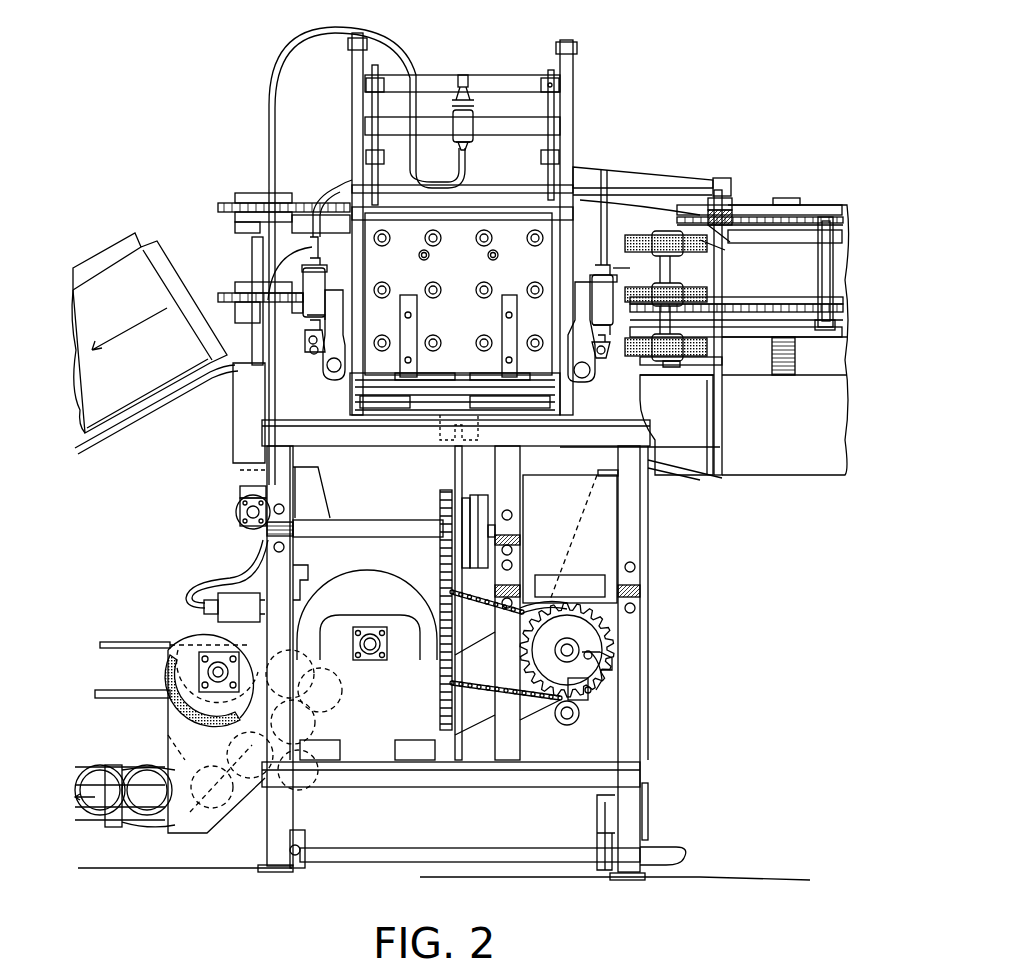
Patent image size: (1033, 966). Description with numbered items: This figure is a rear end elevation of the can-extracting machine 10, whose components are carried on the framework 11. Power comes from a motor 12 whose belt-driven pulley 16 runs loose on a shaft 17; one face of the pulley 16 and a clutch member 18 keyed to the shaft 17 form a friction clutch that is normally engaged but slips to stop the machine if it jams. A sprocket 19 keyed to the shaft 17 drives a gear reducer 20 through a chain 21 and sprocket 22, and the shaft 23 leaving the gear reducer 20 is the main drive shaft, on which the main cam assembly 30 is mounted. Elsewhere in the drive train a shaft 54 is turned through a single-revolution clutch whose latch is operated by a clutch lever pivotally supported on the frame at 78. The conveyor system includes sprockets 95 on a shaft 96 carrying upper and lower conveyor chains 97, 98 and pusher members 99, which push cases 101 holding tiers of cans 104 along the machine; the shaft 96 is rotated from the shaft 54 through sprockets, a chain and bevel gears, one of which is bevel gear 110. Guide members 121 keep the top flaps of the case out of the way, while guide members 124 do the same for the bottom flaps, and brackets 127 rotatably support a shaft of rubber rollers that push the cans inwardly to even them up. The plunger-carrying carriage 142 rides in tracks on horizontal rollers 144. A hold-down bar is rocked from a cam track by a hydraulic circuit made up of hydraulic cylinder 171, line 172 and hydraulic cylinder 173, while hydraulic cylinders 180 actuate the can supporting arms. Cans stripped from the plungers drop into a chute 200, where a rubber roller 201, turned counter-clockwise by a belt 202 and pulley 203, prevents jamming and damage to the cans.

The machine 10 is at (701, 540).
The framework 11 is at (640, 680).
The motor 12 is at (572, 534).
The pulley 16 is at (480, 498).
The shaft 17 is at (386, 525).
The clutch member 18 is at (468, 496).
The sprocket 19 is at (440, 500).
The gear reducer 20 is at (380, 628).
The chain 21 is at (440, 562).
The sprocket 22 is at (450, 716).
The shaft 23 is at (366, 670).
The main cam assembly 30 is at (366, 571).
The shaft 54 is at (576, 632).
The pivot 78 is at (295, 856).
The sprockets 95 is at (226, 200).
The shaft 96 is at (250, 252).
The upper conveyor chain 97 is at (766, 212).
The lower conveyor chain 98 is at (758, 305).
The pusher members 99 is at (836, 215).
The cases 101 is at (148, 365).
The cans 104 is at (158, 815).
The bevel gear 110 is at (240, 512).
The guide member 121 is at (722, 248).
The guide members 124 is at (785, 375).
The brackets 127 is at (702, 178).
The carriage 142 is at (502, 418).
The horizontal rollers 144 is at (405, 420).
The hydraulic cylinder 171 is at (472, 125).
The line 172 is at (300, 42).
The hydraulic cylinder 173 is at (252, 619).
The hydraulic cylinders 180 is at (306, 325).
The chute 200 is at (244, 830).
The rubber roller 201 is at (214, 722).
The belt 202 is at (146, 642).
The pulley 203 is at (212, 645).